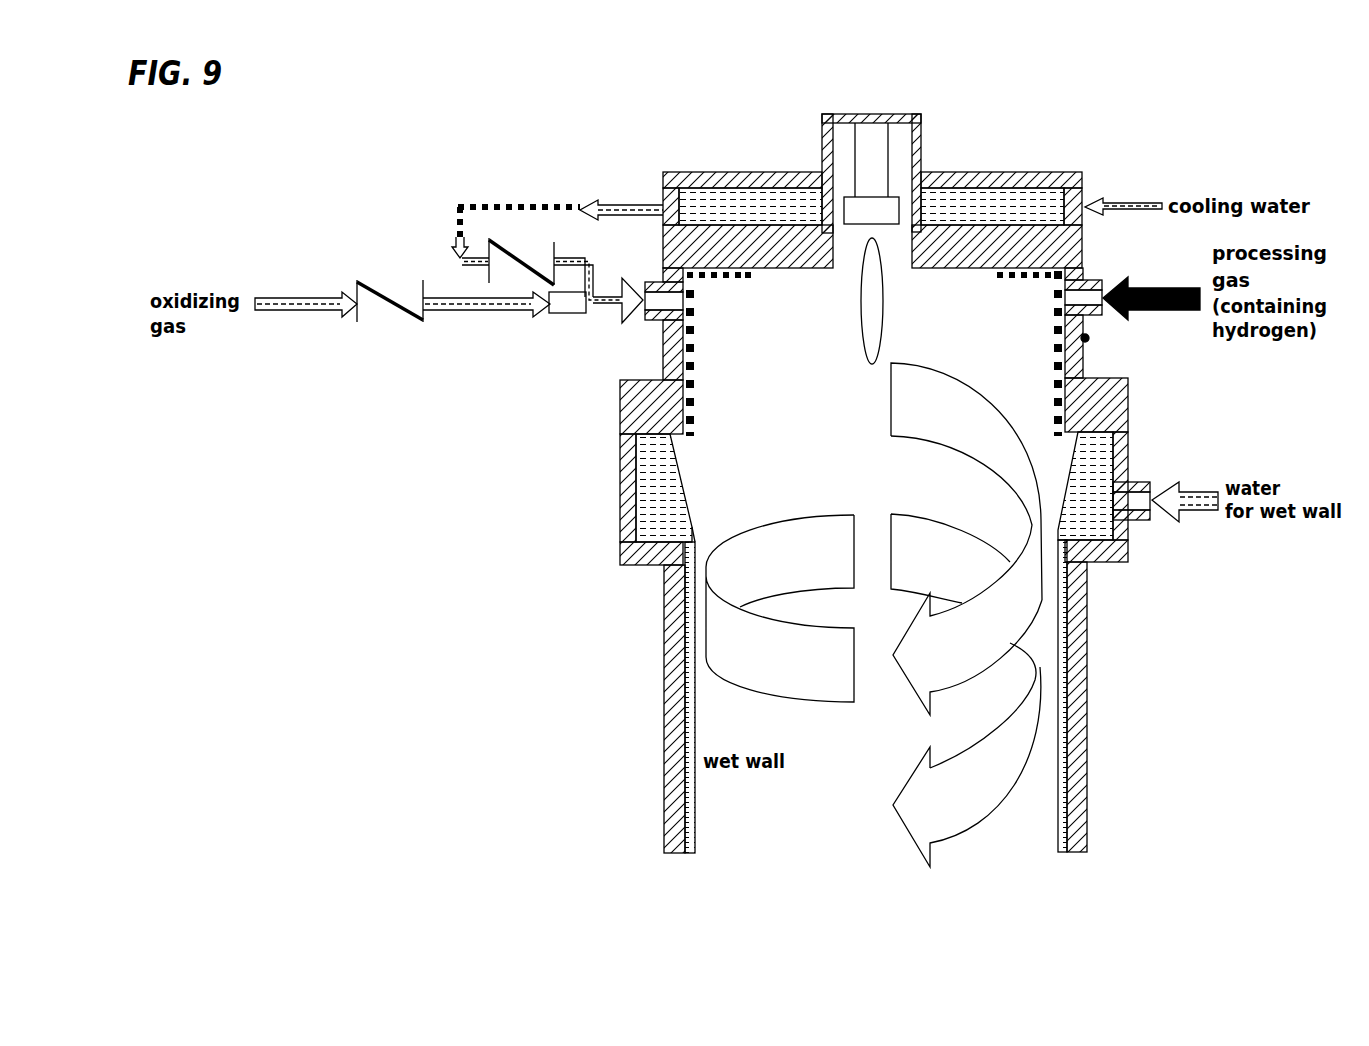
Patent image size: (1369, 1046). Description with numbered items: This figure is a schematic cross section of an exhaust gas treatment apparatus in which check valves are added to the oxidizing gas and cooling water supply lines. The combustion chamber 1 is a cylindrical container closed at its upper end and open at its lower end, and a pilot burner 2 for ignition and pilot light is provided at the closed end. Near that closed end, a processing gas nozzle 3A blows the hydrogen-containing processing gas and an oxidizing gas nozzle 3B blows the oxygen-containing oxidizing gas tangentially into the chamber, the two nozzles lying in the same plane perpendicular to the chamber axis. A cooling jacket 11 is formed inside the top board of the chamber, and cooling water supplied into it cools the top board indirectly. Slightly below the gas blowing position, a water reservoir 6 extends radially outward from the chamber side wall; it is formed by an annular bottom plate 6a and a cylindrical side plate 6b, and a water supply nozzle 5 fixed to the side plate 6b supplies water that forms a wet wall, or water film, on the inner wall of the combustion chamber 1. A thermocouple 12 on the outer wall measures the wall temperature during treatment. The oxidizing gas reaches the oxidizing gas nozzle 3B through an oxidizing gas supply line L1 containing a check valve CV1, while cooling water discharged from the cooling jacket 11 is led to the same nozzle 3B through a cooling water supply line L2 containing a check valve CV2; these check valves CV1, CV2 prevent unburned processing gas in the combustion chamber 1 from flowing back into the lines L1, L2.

The combustion chamber 1 is at (1083, 715).
The pilot burner 2 is at (822, 152).
The processing gas nozzle 3A is at (1093, 277).
The oxidizing gas nozzle 3B is at (655, 282).
The water supply nozzle 5 is at (1147, 520).
The water reservoir 6 is at (1149, 506).
The annular bottom plate 6a is at (1107, 563).
The cylindrical side plate 6b is at (1125, 467).
The cooling jacket 11 is at (1003, 195).
The thermocouple 12 is at (1085, 338).
The check valve CV1 is at (387, 310).
The check valve CV2 is at (515, 252).
The oxidizing gas supply line L1 is at (473, 310).
The cooling water supply line L2 is at (597, 277).